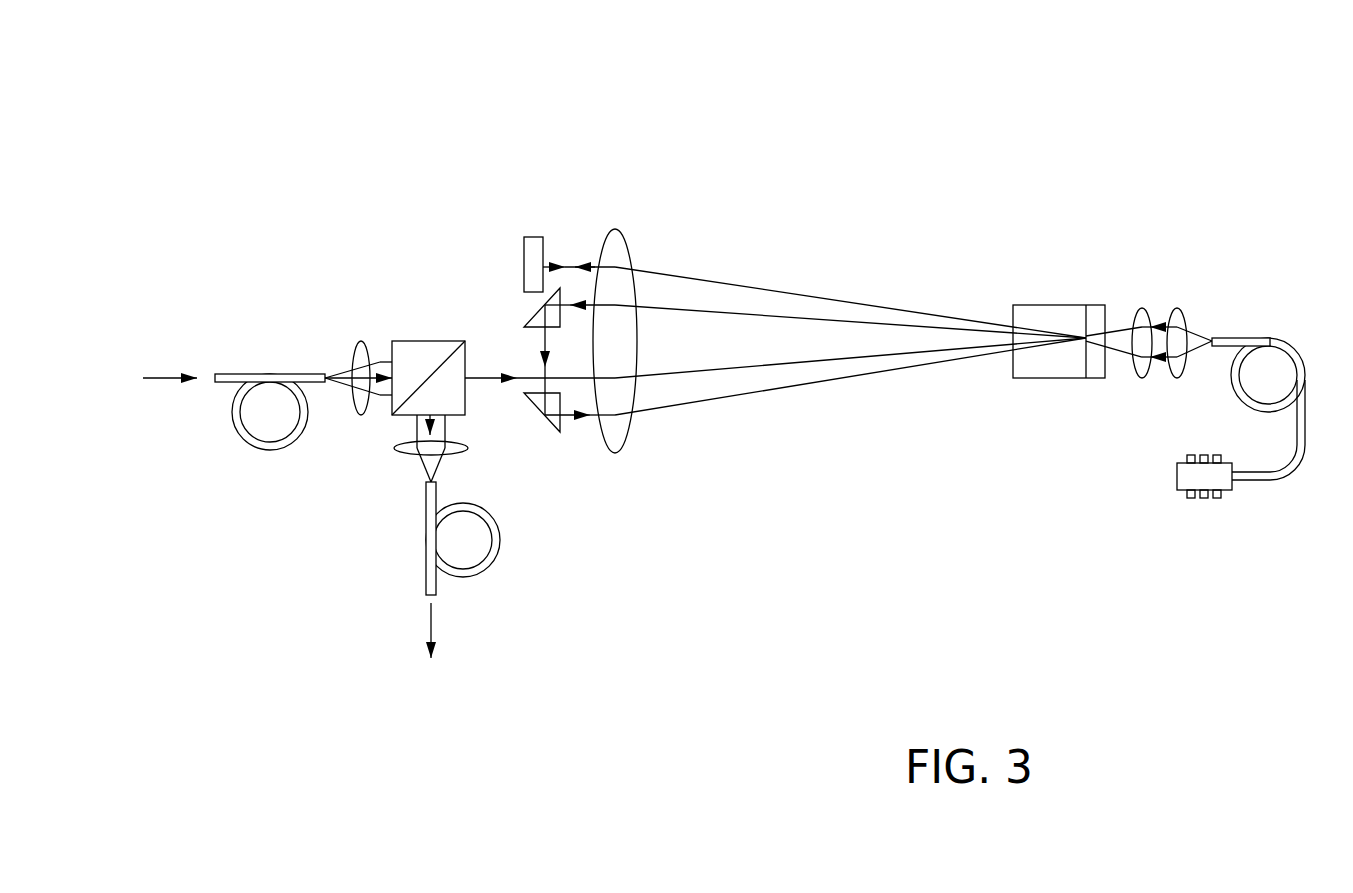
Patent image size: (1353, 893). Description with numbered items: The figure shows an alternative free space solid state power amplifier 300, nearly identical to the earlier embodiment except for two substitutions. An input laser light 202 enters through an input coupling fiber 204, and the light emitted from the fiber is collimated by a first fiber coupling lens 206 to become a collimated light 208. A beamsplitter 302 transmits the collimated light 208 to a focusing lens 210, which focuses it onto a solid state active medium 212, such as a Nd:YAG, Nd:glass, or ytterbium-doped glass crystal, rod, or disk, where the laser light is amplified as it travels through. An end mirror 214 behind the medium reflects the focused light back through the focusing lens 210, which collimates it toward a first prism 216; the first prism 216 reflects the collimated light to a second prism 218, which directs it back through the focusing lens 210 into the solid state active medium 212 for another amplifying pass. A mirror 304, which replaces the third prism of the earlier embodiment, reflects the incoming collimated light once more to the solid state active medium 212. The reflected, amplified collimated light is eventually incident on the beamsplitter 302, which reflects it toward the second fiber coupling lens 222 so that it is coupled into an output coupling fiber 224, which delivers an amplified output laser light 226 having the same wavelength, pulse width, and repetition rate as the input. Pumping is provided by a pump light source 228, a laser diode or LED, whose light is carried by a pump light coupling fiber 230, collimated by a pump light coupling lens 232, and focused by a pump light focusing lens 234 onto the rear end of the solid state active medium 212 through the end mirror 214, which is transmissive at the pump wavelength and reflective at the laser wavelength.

The free space solid state power amplifier 300 is at (266, 137).
The input laser light 202 is at (158, 376).
The input coupling fiber 204 is at (273, 447).
The first fiber coupling lens 206 is at (367, 352).
The collimated light 208 is at (374, 357).
The beamsplitter 302 is at (417, 340).
The second fiber coupling lens 222 is at (407, 453).
The output coupling fiber 224 is at (500, 538).
The amplified output laser light 226 is at (437, 620).
The mirror 304 is at (530, 236).
The first prism 216 is at (538, 308).
The second prism 218 is at (535, 413).
The focusing lens 210 is at (627, 243).
The solid state active medium 212 is at (1025, 382).
The end mirror 214 is at (1093, 382).
The pump light focusing lens 234 is at (1137, 305).
The pump light coupling lens 232 is at (1178, 305).
The pump light coupling fiber 230 is at (1232, 335).
The pump light source 228 is at (1178, 492).